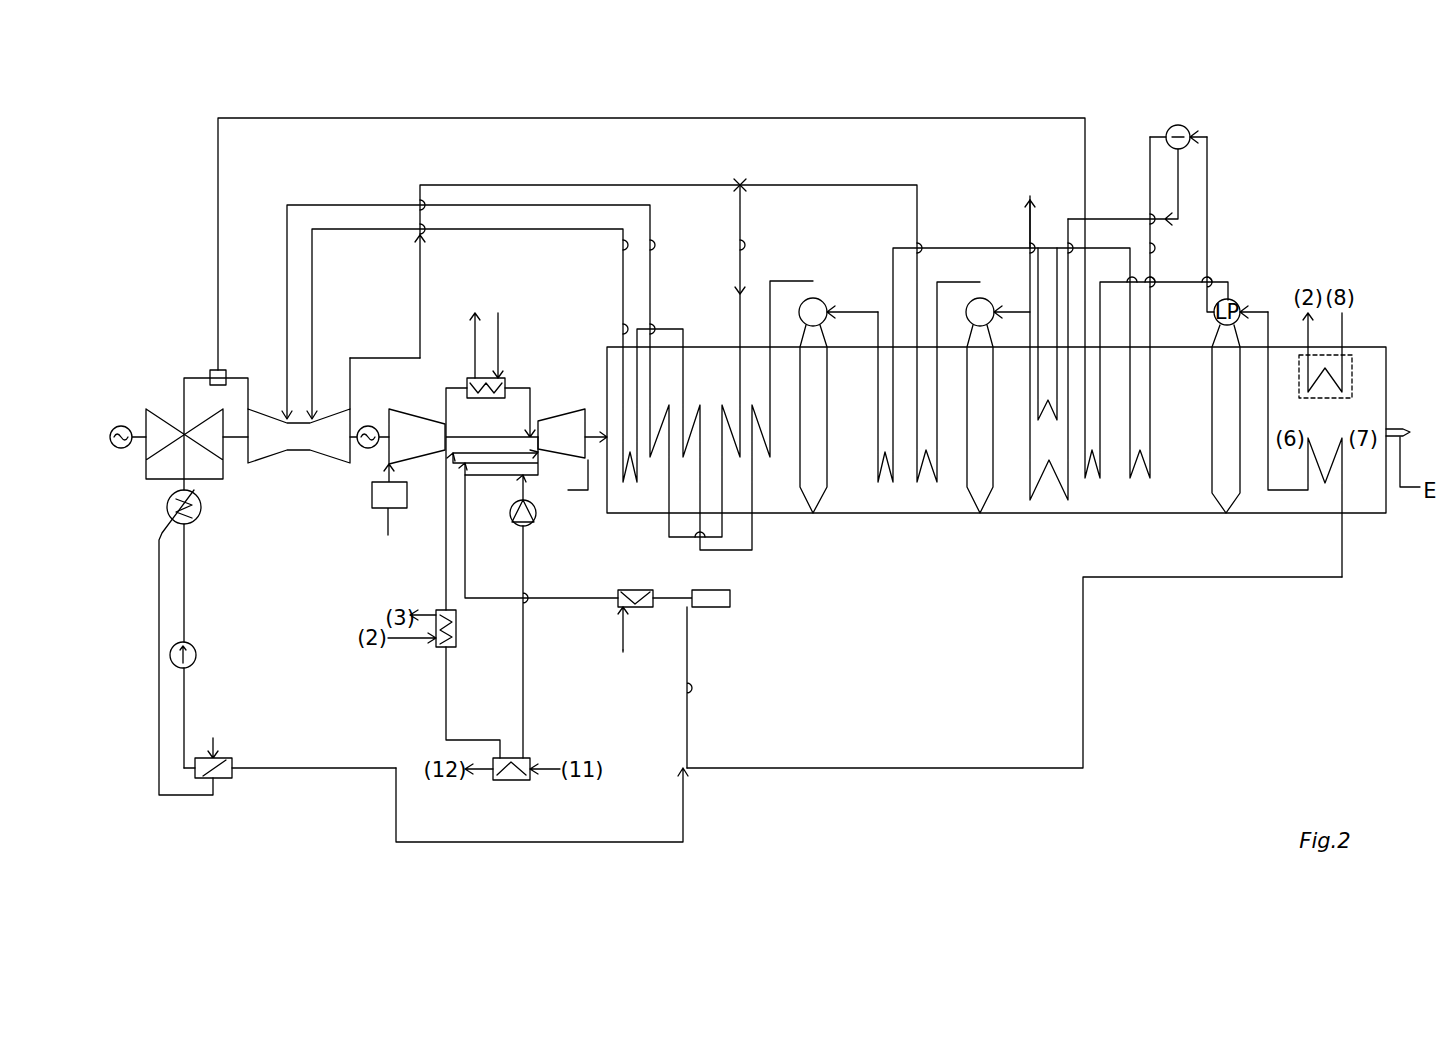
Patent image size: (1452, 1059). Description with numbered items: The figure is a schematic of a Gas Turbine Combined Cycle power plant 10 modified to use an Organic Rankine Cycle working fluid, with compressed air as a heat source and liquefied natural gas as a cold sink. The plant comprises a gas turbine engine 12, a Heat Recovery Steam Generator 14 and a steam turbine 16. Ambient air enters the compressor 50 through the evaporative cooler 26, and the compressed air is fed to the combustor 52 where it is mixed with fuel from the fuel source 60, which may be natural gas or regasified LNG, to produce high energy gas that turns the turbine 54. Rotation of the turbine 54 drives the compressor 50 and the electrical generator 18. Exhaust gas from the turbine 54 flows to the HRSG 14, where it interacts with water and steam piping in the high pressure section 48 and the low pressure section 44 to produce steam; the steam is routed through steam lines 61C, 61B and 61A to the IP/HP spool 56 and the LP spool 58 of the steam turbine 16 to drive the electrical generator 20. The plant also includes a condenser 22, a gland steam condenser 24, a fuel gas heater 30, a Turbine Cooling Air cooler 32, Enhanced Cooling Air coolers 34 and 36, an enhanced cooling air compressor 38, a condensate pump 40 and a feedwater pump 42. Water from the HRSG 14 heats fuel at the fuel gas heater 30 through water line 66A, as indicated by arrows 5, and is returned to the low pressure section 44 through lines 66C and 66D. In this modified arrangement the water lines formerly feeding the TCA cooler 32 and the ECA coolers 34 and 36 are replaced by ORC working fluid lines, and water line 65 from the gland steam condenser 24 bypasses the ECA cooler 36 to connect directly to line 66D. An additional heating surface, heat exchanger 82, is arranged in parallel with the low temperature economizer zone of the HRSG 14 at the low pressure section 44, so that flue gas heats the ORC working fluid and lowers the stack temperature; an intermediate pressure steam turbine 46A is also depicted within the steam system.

The Gas Turbine Combined Cycle power plant 10 is at (1346, 76).
The gas turbine engine 12 is at (498, 448).
The Heat Recovery Steam Generator 14 is at (1386, 530).
The steam turbine 16 is at (345, 448).
The electrical generator 18 is at (368, 424).
The electrical generator 20 is at (122, 424).
The condenser 22 is at (203, 530).
The gland steam condenser 24 is at (220, 758).
The evaporative cooler 26 is at (407, 495).
The fuel gas heater 30 is at (640, 584).
The Turbine Cooling Air cooler 32 is at (487, 383).
The Enhanced Cooling Air cooler 34 is at (458, 630).
The Enhanced Cooling Air cooler 36 is at (512, 787).
The enhanced cooling air compressor 38 is at (538, 520).
The condensate pump 40 is at (197, 655).
The feedwater pump 42 is at (1178, 122).
The low pressure section 44 is at (1209, 374).
The intermediate pressure steam turbine 46A is at (997, 296).
The high pressure section 48 is at (825, 252).
The compressor 50 is at (415, 418).
The combustor 52 is at (488, 478).
The turbine 54 is at (570, 409).
The IP/HP spool 56 is at (288, 470).
The LP spool 58 is at (155, 453).
The fuel source 60 is at (712, 612).
The steam line 61A is at (654, 118).
The steam line 61B is at (282, 319).
The steam line 61C is at (322, 324).
The water line 65 is at (537, 855).
The water line 66A is at (1020, 229).
The water line 66C is at (646, 729).
The water line 66D is at (960, 764).
The heat exchanger 82 is at (1365, 338).
The arrows 5'-5' 5 is at (1040, 167).